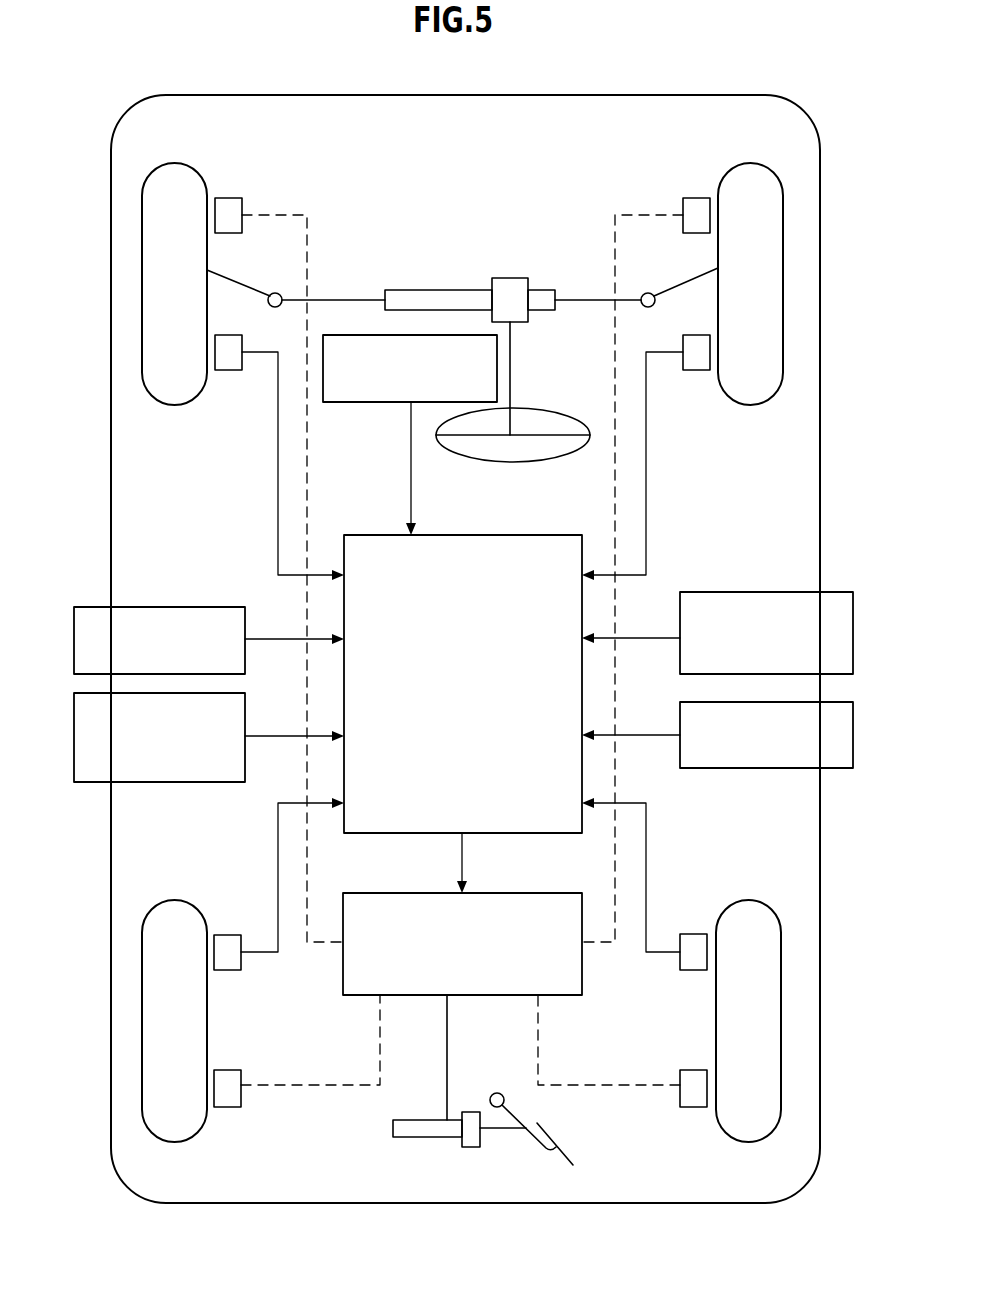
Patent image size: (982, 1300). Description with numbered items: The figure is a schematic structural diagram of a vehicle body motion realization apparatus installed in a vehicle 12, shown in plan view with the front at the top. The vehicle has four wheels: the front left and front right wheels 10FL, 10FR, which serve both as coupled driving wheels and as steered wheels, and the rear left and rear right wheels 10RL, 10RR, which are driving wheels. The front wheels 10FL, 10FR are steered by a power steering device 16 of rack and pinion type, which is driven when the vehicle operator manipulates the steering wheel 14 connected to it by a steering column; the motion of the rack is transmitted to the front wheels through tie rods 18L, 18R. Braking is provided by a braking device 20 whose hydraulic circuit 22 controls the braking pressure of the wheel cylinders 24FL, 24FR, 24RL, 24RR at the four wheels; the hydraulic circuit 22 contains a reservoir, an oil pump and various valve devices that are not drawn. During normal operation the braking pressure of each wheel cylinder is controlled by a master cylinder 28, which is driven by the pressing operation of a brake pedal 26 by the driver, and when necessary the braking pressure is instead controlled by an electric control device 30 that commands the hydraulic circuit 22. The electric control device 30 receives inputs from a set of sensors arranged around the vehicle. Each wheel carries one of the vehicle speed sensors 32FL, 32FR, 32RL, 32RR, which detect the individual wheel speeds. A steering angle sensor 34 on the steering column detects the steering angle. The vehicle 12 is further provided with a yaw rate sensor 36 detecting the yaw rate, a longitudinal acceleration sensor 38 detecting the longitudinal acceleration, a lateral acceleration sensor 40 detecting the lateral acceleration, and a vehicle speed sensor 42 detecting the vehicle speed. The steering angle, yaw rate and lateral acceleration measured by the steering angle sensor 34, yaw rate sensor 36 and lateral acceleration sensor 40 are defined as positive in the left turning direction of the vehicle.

The front left wheel 10FL is at (142, 302).
The front right wheel 10FR is at (783, 302).
The rear left wheel 10RL is at (142, 1037).
The rear right wheel 10RR is at (781, 1037).
The vehicle 12 is at (821, 462).
The steering wheel 14 is at (512, 462).
The power steering device 16 is at (500, 260).
The tie rod 18L is at (247, 283).
The tie rod 18R is at (681, 283).
The braking device 20 is at (453, 1093).
The hydraulic circuit 22 is at (477, 982).
The wheel cylinder 24FL is at (228, 213).
The wheel cylinder 24FR is at (694, 213).
The wheel cylinder 24RL is at (228, 1095).
The wheel cylinder 24RR is at (692, 1095).
The brake pedal 26 is at (563, 1150).
The master cylinder 28 is at (423, 1137).
The electric control device 30 is at (478, 732).
The vehicle speed sensor 32FL is at (232, 358).
The vehicle speed sensor 32FR is at (698, 358).
The vehicle speed sensor 32RL is at (228, 945).
The vehicle speed sensor 32RR is at (689, 945).
The steering angle sensor 34 is at (370, 402).
The yaw rate sensor 36 is at (157, 607).
The longitudinal acceleration sensor 38 is at (157, 782).
The lateral acceleration sensor 40 is at (768, 592).
The vehicle speed sensor 42 is at (770, 768).